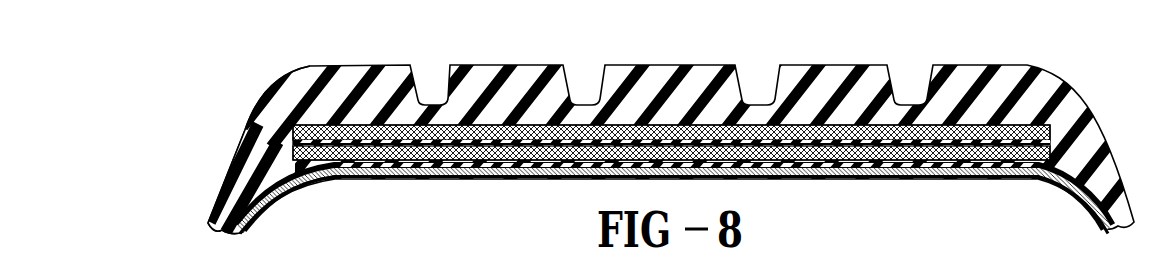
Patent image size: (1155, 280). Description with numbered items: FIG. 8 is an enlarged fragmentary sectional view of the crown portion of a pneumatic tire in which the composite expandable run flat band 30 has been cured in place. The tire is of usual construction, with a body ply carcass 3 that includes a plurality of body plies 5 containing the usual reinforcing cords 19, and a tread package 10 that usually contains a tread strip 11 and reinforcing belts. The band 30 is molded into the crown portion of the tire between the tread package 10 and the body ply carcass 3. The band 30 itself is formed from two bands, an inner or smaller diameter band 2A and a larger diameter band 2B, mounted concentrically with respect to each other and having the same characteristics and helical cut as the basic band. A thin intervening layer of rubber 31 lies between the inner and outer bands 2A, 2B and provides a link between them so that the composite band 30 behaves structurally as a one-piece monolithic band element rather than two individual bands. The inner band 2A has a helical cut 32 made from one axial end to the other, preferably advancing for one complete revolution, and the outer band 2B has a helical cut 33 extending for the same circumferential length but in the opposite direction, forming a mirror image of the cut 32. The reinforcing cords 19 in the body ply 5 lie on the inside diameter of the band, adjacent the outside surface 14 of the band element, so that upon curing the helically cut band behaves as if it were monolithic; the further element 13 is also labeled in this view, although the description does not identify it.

The tread package 10 is at (880, 47).
The tread strip 11 is at (660, 68).
The inner band 2A is at (402, 182).
The outer band 2B is at (314, 105).
The body ply carcass 3 is at (212, 178).
The composite band 30 is at (267, 126).
The ply cords 13 is at (528, 162).
The outside surface 14 is at (543, 125).
The reinforcing cords 19 is at (483, 172).
The body plies 5 is at (903, 175).
The intervening layer of rubber 31 is at (357, 140).
The helical cut 32 is at (877, 166).
The helical cut 33 is at (808, 130).